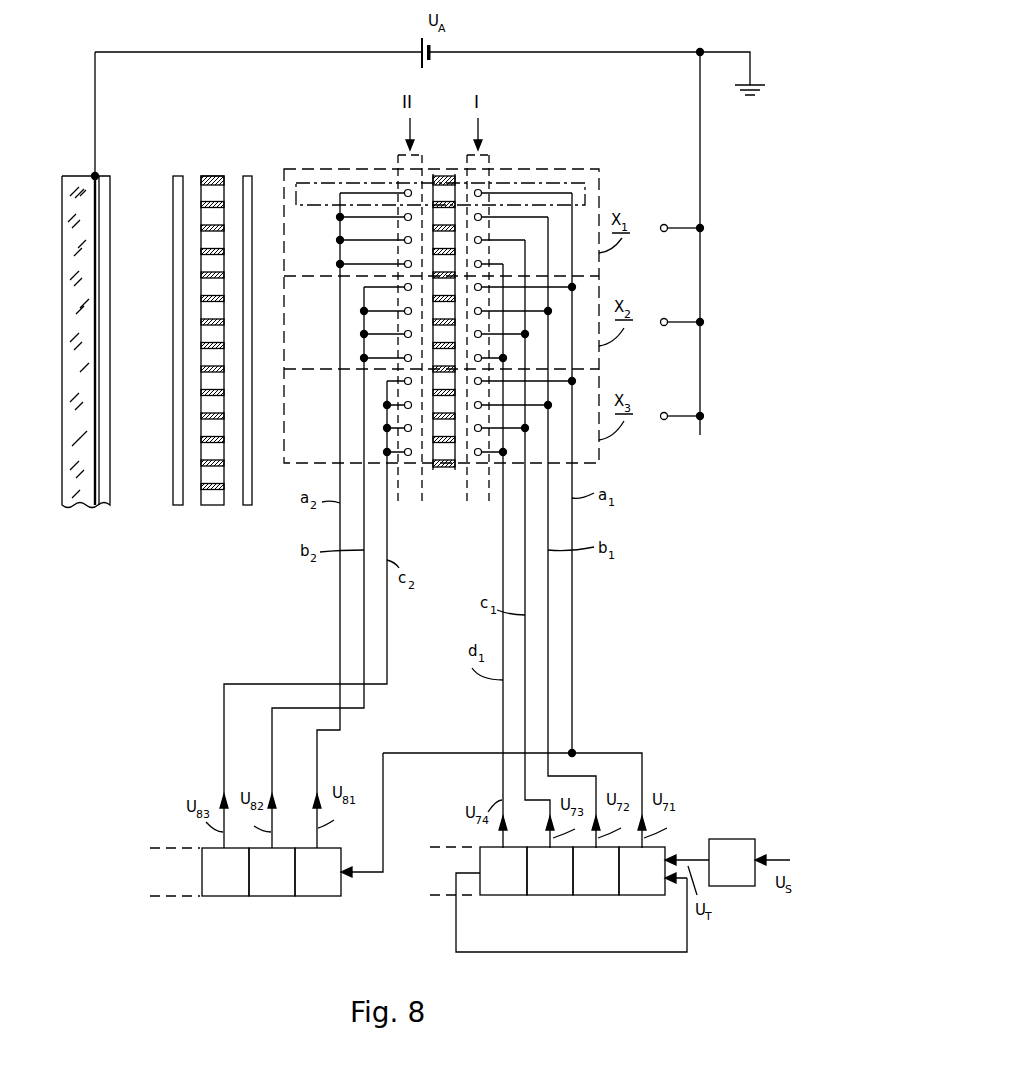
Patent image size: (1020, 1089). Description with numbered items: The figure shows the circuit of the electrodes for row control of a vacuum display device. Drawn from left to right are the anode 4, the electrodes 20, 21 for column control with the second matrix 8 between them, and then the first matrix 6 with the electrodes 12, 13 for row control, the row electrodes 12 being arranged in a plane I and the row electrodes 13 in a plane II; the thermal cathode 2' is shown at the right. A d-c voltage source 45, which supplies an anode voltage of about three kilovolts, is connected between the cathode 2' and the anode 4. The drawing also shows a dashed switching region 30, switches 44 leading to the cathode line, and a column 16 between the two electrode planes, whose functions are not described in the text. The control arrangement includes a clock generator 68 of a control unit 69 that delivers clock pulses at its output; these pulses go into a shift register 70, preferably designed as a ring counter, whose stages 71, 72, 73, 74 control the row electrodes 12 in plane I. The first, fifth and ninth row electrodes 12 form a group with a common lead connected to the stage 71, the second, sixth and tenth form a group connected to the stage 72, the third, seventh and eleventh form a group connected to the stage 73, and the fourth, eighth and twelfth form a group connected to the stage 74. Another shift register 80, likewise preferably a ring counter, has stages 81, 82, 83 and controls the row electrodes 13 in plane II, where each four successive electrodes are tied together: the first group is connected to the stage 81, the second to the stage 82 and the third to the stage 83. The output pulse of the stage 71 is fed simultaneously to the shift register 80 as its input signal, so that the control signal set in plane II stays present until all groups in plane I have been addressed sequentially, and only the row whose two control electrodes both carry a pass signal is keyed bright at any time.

The anode 4 is at (95, 508).
The electrode for column control 21 is at (176, 497).
The second matrix 8 is at (212, 495).
The electrode for column control 20 is at (247, 500).
The row electrodes in plane II 13 is at (405, 190).
The conductor column 16 is at (440, 183).
The row electrodes in plane I 12 is at (484, 190).
The switching matrix 30 is at (545, 183).
The first matrix 6 is at (445, 468).
The switch 44 is at (666, 224).
The d-c voltage source 45 is at (444, 52).
The thermal cathode 2' is at (732, 243).
The shift register 80 is at (245, 894).
The stage of shift register 80 81 is at (318, 872).
The stage of shift register 80 82 is at (272, 872).
The stage of shift register 80 83 is at (225, 872).
The shift register 70 is at (547, 891).
The stage of shift register 70 71 is at (642, 871).
The stage of shift register 70 72 is at (596, 871).
The stage of shift register 70 73 is at (550, 871).
The stage of shift register 70 74 is at (503, 871).
The clock generator 68 is at (732, 862).
The control unit 69 is at (667, 990).